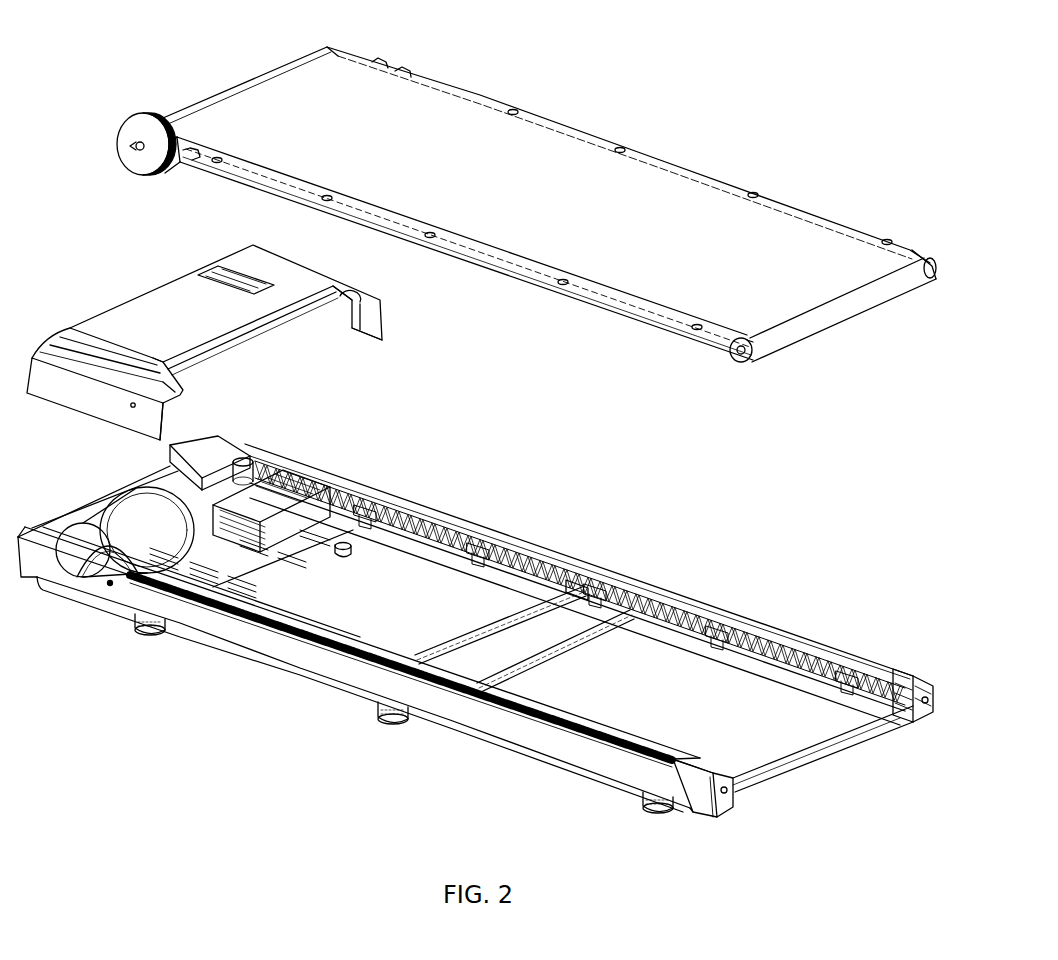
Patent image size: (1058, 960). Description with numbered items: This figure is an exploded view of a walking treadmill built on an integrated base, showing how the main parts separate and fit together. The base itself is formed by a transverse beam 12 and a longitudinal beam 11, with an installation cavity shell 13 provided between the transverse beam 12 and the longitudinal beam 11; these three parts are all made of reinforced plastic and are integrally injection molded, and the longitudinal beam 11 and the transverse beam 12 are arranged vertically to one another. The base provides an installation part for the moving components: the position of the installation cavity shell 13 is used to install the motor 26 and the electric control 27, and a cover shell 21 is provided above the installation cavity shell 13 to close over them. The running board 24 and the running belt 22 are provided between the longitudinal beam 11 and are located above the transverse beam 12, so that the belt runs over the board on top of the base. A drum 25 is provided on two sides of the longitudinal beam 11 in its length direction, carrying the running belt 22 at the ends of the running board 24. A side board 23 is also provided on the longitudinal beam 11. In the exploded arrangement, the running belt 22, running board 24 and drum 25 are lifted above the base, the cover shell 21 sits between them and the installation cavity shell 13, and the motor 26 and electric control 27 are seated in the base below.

The longitudinal beam 11 is at (610, 762).
The transverse beam 12 is at (813, 742).
The installation cavity shell 13 is at (267, 537).
The cover shell 21 is at (138, 320).
The running belt 22 is at (261, 100).
The side board 23 is at (575, 555).
The running board 24 is at (240, 165).
The drum 25 is at (772, 342).
The motor 26 is at (122, 525).
The electric control 27 is at (247, 452).